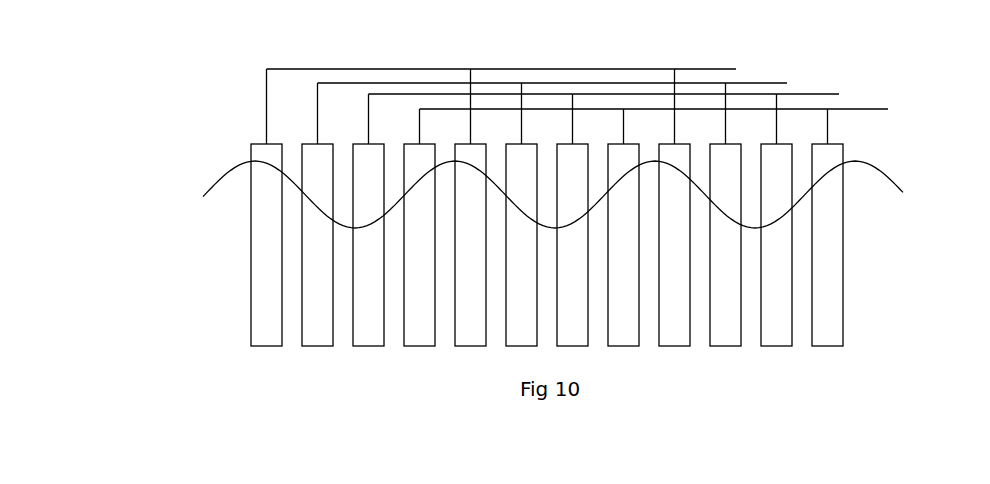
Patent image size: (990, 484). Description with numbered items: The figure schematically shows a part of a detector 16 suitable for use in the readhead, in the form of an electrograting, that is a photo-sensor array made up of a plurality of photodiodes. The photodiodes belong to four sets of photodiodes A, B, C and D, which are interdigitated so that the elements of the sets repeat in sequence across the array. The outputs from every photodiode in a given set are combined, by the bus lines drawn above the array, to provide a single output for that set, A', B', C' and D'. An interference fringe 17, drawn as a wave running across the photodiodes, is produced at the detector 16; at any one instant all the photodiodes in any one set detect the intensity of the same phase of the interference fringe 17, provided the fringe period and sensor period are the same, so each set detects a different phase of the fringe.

The detector 16 is at (168, 271).
The interference fringe 17 is at (218, 163).
The first set of photodiodes A is at (504, 201).
The second set of photodiodes B is at (555, 210).
The third set of photodiodes C is at (606, 215).
The fourth set of photodiodes D is at (658, 222).